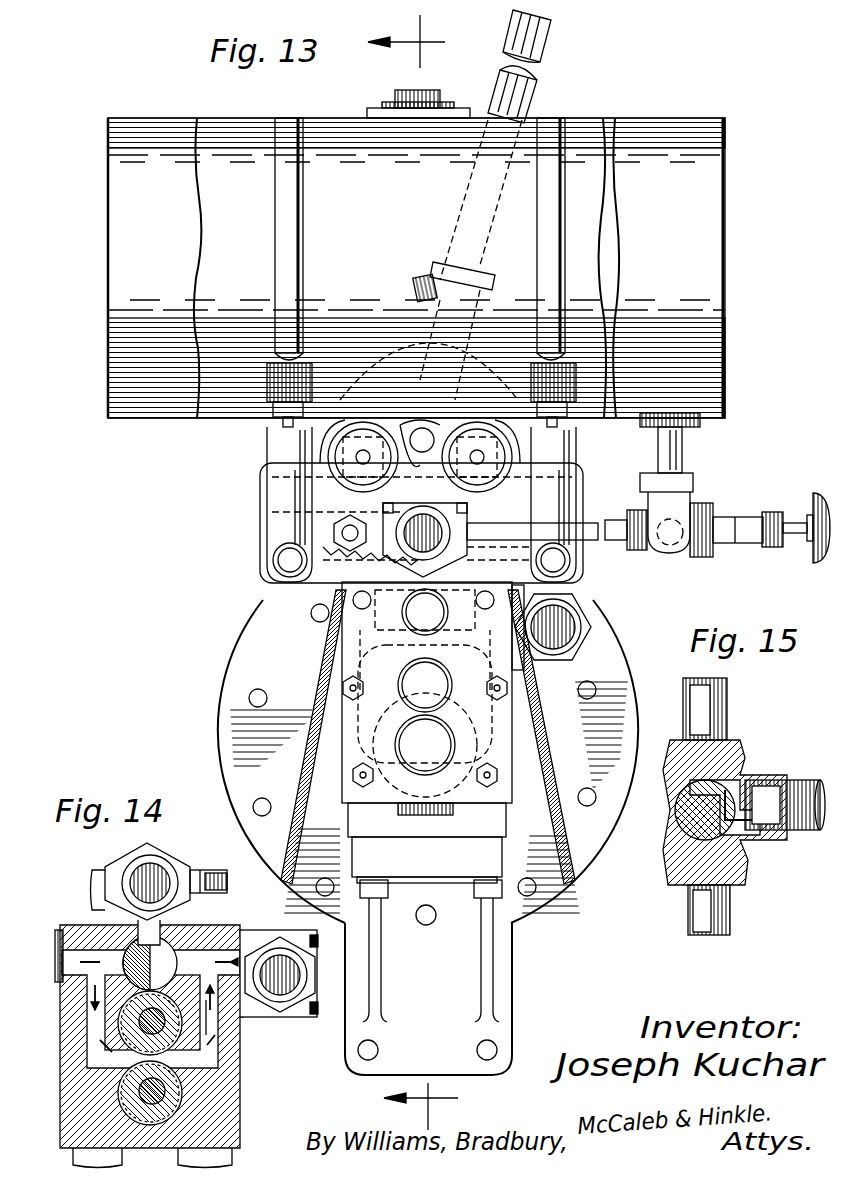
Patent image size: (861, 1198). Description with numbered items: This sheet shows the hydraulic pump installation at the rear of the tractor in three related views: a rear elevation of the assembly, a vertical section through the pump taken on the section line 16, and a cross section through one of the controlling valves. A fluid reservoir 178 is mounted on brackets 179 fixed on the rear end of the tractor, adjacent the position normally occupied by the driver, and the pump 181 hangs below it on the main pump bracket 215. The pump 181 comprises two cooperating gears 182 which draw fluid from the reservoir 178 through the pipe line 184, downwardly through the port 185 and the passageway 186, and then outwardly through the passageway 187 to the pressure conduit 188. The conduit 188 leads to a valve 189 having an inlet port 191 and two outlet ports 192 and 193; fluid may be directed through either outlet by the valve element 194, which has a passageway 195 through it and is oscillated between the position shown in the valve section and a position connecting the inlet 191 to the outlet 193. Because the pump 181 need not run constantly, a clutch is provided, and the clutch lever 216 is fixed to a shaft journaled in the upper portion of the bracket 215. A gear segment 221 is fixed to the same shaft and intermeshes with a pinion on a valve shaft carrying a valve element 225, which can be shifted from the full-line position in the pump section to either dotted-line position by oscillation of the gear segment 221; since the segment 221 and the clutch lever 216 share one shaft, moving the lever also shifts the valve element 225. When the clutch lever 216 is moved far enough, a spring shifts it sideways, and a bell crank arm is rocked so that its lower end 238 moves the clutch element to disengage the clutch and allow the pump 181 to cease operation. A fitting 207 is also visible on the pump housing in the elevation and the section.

In FIG. 13, the section line 16 is at (429, 572).
In FIG. 13, the reservoir 178 is at (705, 163).
In FIG. 13, the brackets 179 is at (275, 452).
In FIG. 13, the pump 181 is at (334, 657).
In FIG. 14, the cooperating gears 182 is at (175, 1090).
In FIG. 13, the pipe line 184 is at (682, 445).
In FIG. 14, the pipe line 184 is at (208, 870).
In FIG. 14, the port 185 is at (136, 940).
In FIG. 14, the passageway 186 is at (98, 1022).
In FIG. 14, the passageway 187 is at (210, 1035).
In FIG. 13, the pressure conduit 188 is at (592, 624).
In FIG. 15, the valve 189 is at (665, 850).
In FIG. 15, the inlet port 191 is at (802, 784).
In FIG. 15, the outlet port 192 is at (700, 920).
In FIG. 15, the outlet port 193 is at (720, 688).
In FIG. 15, the valve element 194 is at (672, 820).
In FIG. 15, the passageway 195 is at (735, 835).
In FIG. 13, the fitting 207 is at (383, 512).
In FIG. 14, the fitting 207 is at (140, 877).
In FIG. 13, the main pump bracket 215 is at (500, 985).
In FIG. 13, the clutch lever 216 is at (548, 37).
In FIG. 13, the gear segment 221 is at (262, 578).
In FIG. 14, the valve element 225 is at (205, 940).
In FIG. 13, the lower end 238 is at (500, 700).